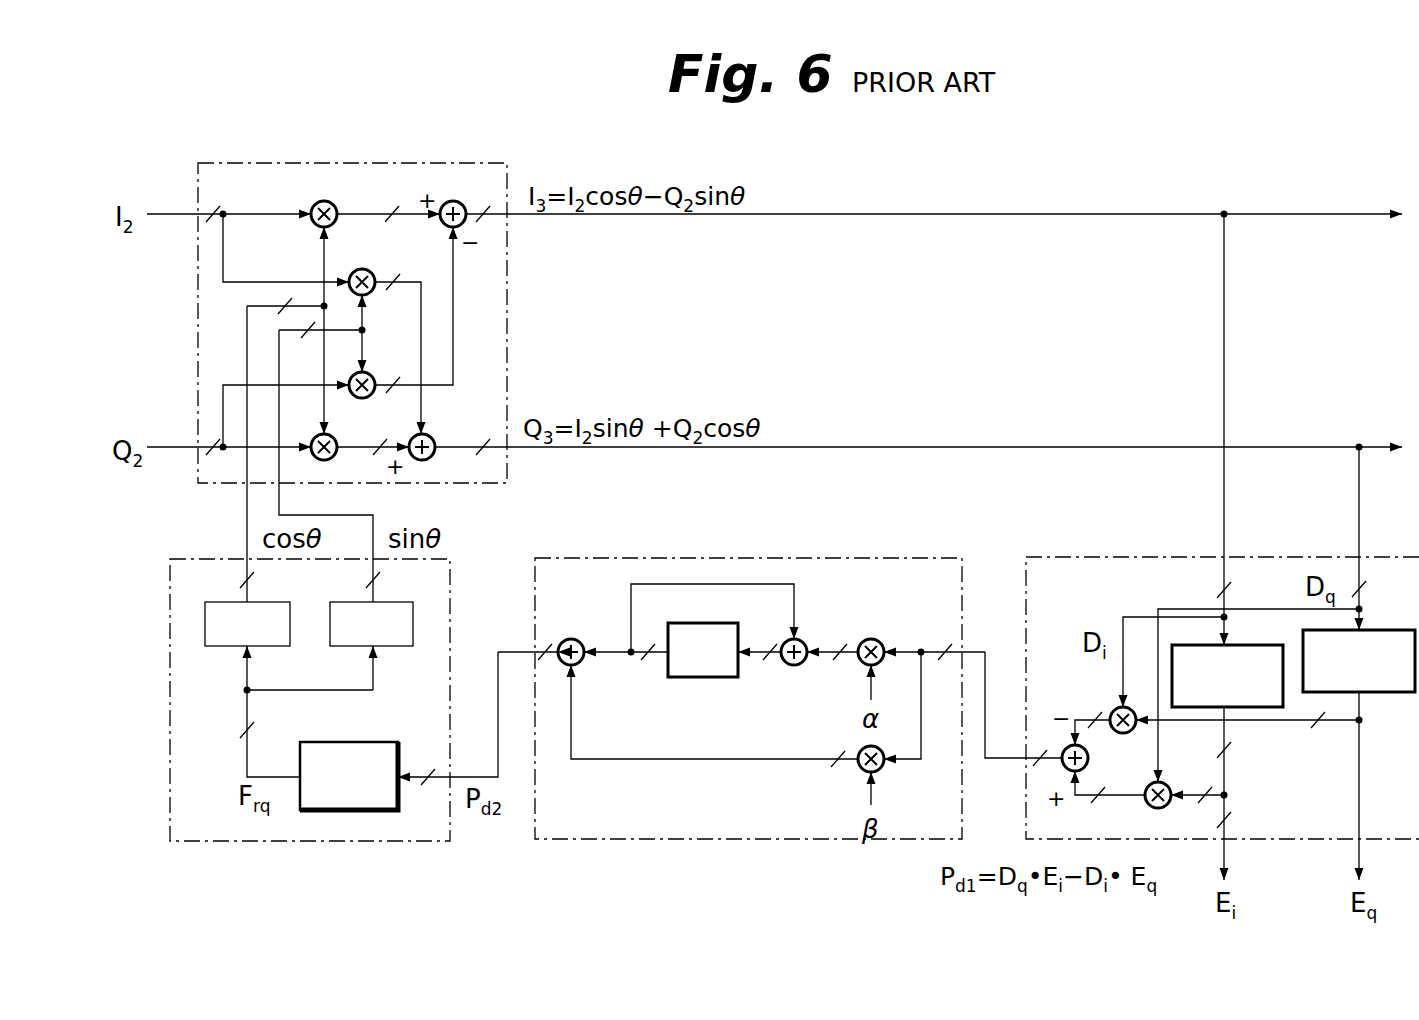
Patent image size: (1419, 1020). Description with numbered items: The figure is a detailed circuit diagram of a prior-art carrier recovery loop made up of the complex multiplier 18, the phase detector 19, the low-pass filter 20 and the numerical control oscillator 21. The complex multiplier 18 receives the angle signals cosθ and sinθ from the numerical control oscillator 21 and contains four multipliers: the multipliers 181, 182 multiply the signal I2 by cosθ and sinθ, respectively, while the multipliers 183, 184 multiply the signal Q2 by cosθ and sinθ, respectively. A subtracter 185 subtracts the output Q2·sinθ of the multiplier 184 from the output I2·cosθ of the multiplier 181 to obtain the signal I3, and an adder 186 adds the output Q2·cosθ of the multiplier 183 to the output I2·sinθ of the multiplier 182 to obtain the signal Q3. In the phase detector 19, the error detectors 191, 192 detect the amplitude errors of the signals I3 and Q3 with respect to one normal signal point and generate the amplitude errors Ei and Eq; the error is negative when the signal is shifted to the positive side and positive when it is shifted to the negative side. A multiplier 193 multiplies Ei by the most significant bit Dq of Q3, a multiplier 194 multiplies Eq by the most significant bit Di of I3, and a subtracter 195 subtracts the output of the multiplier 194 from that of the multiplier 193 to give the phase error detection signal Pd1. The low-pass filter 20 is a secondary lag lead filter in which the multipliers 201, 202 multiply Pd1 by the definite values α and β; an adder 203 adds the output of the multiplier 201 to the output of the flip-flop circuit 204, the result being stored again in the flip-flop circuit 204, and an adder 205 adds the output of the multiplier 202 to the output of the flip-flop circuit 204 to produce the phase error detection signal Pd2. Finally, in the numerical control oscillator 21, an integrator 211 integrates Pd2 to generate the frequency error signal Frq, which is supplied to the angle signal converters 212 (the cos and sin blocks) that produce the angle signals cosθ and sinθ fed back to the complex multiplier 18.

The complex multiplier 18 is at (468, 163).
The multiplier 181 is at (350, 194).
The multiplier 182 is at (388, 258).
The multiplier 183 is at (352, 433).
The multiplier 184 is at (388, 356).
The subtracter 185 is at (480, 194).
The adder 186 is at (462, 432).
The phase detector 19 is at (1056, 556).
The error detector 191 is at (1256, 615).
The error detector 192 is at (1393, 618).
The multiplier 193 is at (1190, 774).
The multiplier 194 is at (1112, 710).
The subtracter 195 is at (1090, 752).
The low-pass filter 20 is at (927, 558).
The multiplier 201 is at (881, 639).
The multiplier 202 is at (858, 768).
The adder 203 is at (792, 670).
The flip-flop circuit 204 is at (692, 677).
The adder 205 is at (579, 639).
The numerical control oscillator 21 is at (170, 788).
The integrator 211 is at (366, 742).
The angle signal converter 212 is at (228, 648).